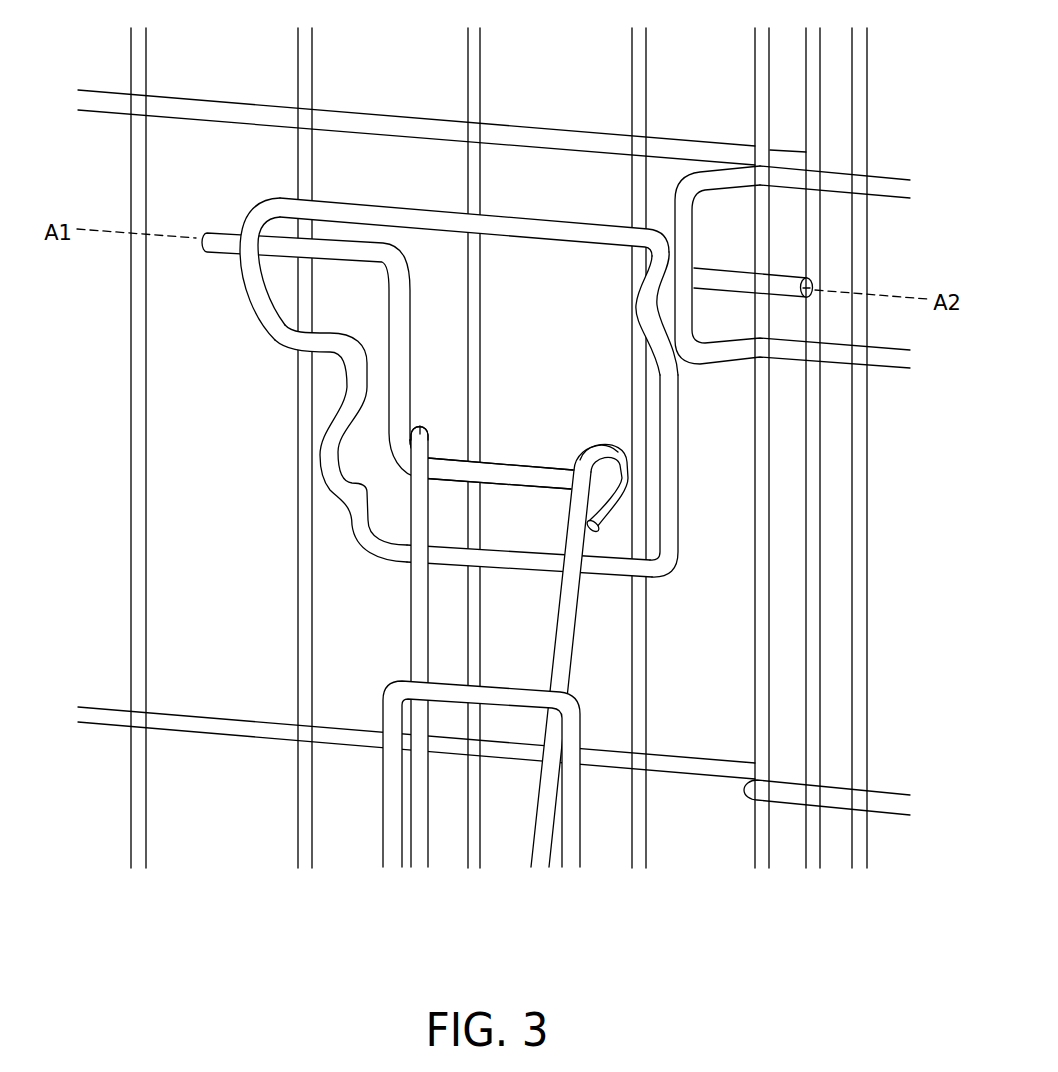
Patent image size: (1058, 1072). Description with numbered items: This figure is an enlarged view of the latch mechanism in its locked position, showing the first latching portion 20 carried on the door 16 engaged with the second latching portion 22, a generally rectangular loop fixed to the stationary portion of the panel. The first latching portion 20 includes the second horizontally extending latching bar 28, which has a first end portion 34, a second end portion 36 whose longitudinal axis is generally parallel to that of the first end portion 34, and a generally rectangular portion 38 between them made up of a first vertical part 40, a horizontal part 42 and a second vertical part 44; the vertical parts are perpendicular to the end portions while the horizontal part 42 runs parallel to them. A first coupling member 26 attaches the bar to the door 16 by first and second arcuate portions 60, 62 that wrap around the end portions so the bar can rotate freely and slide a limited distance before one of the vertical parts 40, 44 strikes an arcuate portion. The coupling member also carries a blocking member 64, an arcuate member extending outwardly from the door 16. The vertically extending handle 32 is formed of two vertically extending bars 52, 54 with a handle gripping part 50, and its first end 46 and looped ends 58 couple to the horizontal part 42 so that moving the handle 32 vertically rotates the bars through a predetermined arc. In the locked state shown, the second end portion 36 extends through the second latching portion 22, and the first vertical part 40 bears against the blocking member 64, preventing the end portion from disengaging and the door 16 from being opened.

The door 16 is at (385, 113).
The first latching portion 20 is at (455, 492).
The second latching portion 22 is at (888, 354).
The first coupling member 26 is at (555, 468).
The second horizontally extending latching bar 28 is at (540, 217).
The vertically extending handle 32 is at (582, 790).
The first end portion 34 is at (217, 231).
The second end portion 36 is at (813, 287).
The generally rectangular portion 38 is at (523, 490).
The first vertical part 40 is at (375, 317).
The horizontal part 42 is at (507, 457).
The second vertical part 44 is at (640, 341).
The first end 46 is at (635, 497).
The handle gripping part 50 is at (581, 743).
The vertically extending bar 52 is at (418, 835).
The vertically extending bar 54 is at (555, 840).
The looped ends 58 is at (420, 436).
The first arcuate portion 60 is at (250, 265).
The second arcuate portion 62 is at (660, 262).
The blocking member 64 is at (327, 472).